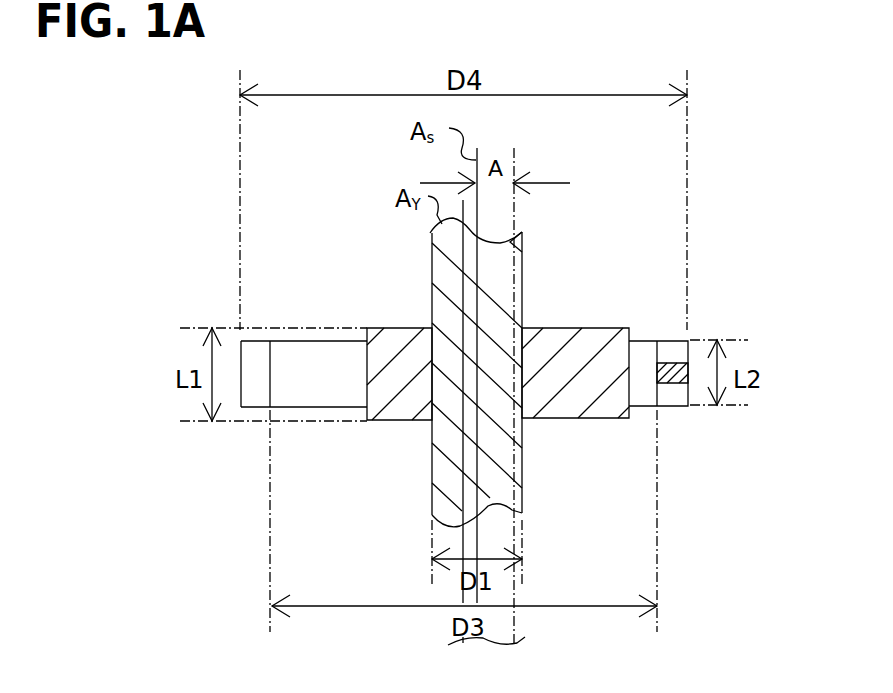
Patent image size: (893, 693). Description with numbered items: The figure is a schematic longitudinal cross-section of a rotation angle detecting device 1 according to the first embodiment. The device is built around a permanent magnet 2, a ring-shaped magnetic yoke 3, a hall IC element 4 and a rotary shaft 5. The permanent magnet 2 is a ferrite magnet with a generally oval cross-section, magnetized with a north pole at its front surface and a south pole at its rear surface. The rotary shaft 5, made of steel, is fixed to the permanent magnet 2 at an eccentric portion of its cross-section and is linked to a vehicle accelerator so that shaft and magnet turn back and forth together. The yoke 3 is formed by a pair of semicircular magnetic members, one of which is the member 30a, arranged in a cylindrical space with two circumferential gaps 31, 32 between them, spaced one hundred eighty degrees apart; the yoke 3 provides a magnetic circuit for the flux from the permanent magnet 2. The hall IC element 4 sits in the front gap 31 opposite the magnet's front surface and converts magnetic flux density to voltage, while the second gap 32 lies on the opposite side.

The rotation angle detecting device 1 is at (712, 160).
The permanent magnet 2 is at (398, 340).
The magnetic yoke 3 is at (293, 350).
The hall IC element 4 is at (673, 363).
The rotary shaft 5 is at (445, 279).
The semicircular magnetic member 30a is at (650, 345).
The front gap 31 is at (669, 395).
The circumferential gap 32 is at (258, 387).